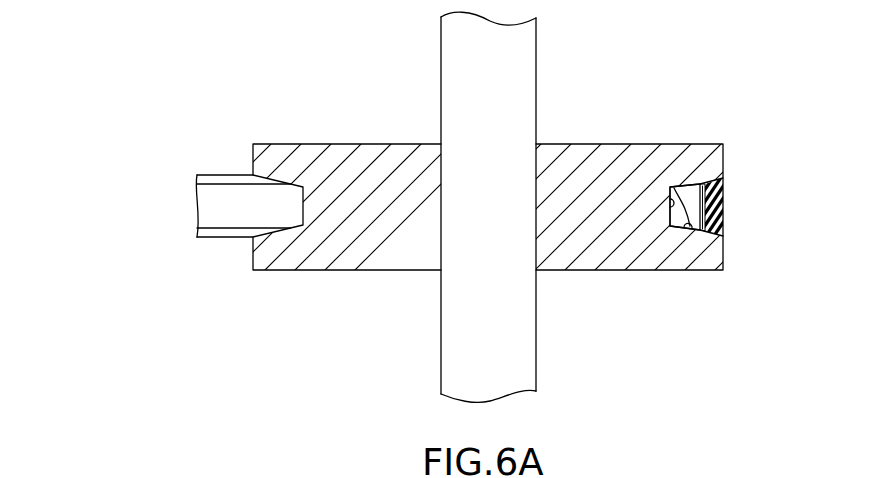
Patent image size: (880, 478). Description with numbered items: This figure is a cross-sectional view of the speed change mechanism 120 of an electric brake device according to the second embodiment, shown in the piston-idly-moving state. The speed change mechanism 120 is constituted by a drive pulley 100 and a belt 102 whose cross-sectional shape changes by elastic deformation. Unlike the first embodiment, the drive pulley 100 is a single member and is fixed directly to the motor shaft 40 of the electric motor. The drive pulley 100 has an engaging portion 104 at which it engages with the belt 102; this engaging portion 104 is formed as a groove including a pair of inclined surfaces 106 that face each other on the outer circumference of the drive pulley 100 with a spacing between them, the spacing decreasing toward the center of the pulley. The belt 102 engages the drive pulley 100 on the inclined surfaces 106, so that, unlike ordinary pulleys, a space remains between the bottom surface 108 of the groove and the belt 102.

The motor shaft 40 is at (458, 362).
The drive pulley 100 is at (605, 154).
The belt 102 is at (722, 195).
The engaging portion 104 is at (652, 292).
The inclined surfaces 106 is at (670, 225).
The bottom surface 108 is at (670, 199).
The speed change mechanism 120 is at (717, 106).